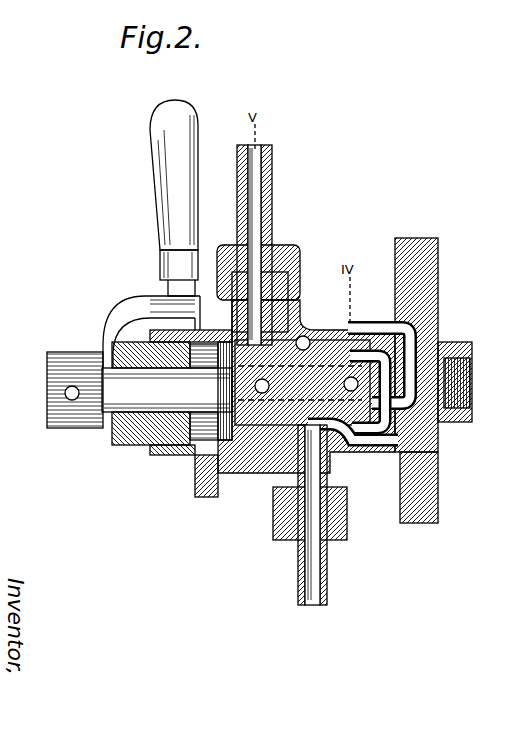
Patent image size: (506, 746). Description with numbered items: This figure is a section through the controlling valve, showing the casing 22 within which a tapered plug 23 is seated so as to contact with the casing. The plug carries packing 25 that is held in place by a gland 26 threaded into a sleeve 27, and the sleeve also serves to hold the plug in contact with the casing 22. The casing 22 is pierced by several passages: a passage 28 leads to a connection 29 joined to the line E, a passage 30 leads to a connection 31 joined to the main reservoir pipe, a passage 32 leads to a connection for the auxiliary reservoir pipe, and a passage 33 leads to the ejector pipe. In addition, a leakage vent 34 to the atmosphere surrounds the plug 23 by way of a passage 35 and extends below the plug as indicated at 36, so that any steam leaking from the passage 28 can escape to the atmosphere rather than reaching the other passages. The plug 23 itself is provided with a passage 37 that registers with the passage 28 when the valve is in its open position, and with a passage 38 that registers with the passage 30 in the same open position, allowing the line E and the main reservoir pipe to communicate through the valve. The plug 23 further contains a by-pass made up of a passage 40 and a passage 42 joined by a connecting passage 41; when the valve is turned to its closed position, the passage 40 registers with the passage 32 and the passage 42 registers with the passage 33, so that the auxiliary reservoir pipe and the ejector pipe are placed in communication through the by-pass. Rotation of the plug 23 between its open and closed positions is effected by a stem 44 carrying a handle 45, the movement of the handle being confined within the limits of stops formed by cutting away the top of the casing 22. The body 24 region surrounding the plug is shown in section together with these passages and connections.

The casing 22 is at (222, 456).
The tapered plug 23 is at (406, 415).
The valve body 24 is at (331, 328).
The packing 25 is at (150, 447).
The gland 26 is at (116, 438).
The sleeve 27 is at (190, 454).
The passage 28 is at (378, 330).
The connection 29 is at (455, 368).
The passage 30 is at (272, 265).
The connection 31 is at (271, 152).
The passage 32 is at (250, 472).
The passage 33 is at (357, 478).
The leakage vent 34 is at (312, 531).
The passage 35 is at (305, 336).
The vent extension 36 is at (378, 445).
The plug passage 37 is at (352, 350).
The plug passage 38 is at (230, 306).
The by-pass passage 40 is at (266, 396).
The connecting passage 41 is at (282, 432).
The by-pass passage 42 is at (382, 399).
The stem 44 is at (108, 372).
The handle 45 is at (170, 230).
The line E is at (478, 375).